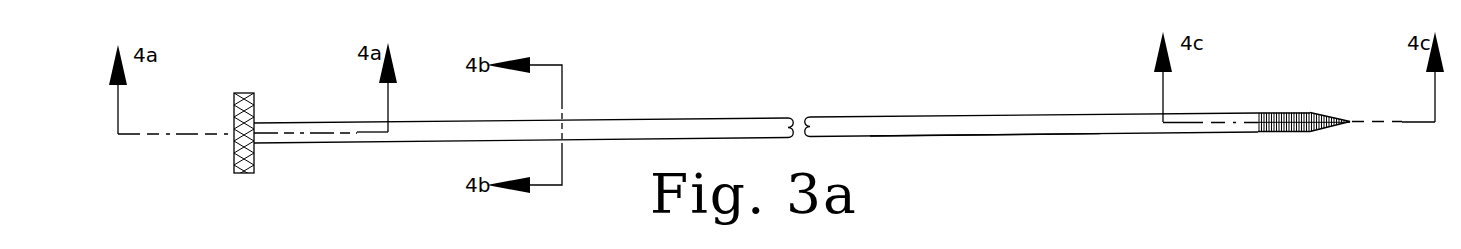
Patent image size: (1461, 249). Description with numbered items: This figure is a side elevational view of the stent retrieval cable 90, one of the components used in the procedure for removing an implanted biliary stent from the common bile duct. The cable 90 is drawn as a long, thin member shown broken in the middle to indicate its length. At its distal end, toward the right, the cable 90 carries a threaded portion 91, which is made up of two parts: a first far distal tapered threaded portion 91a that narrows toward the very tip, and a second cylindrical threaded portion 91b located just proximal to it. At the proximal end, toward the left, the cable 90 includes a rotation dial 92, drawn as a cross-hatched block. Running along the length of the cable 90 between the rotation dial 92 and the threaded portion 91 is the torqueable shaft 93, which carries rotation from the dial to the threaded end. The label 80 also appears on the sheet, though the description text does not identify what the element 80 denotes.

The insertion tool 80 is at (964, 248).
The shaft 90 is at (931, 113).
The shaft body 93 is at (977, 136).
The stop collar 92 is at (255, 109).
The threaded tip 91 is at (1294, 132).
The threaded portion 91b is at (1280, 113).
The tapered tip portion 91a is at (1336, 114).